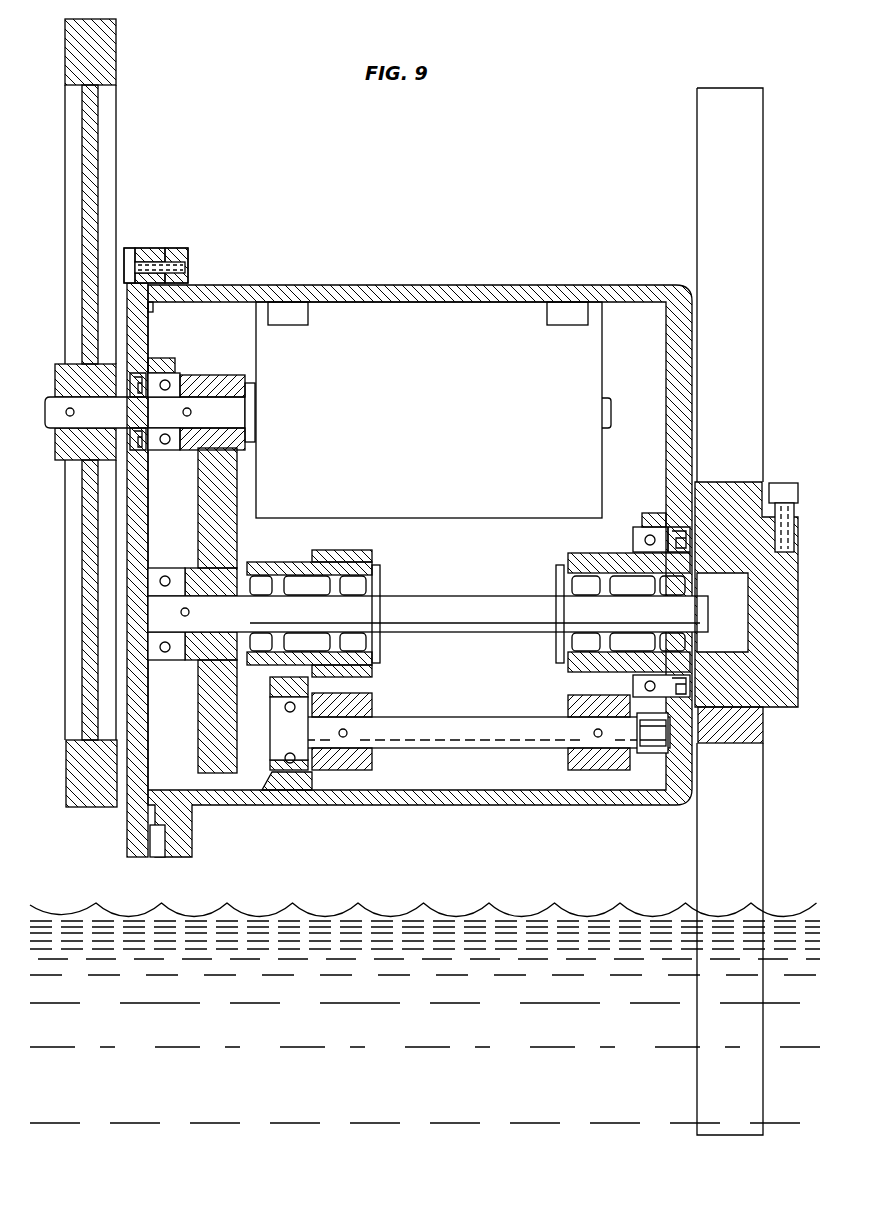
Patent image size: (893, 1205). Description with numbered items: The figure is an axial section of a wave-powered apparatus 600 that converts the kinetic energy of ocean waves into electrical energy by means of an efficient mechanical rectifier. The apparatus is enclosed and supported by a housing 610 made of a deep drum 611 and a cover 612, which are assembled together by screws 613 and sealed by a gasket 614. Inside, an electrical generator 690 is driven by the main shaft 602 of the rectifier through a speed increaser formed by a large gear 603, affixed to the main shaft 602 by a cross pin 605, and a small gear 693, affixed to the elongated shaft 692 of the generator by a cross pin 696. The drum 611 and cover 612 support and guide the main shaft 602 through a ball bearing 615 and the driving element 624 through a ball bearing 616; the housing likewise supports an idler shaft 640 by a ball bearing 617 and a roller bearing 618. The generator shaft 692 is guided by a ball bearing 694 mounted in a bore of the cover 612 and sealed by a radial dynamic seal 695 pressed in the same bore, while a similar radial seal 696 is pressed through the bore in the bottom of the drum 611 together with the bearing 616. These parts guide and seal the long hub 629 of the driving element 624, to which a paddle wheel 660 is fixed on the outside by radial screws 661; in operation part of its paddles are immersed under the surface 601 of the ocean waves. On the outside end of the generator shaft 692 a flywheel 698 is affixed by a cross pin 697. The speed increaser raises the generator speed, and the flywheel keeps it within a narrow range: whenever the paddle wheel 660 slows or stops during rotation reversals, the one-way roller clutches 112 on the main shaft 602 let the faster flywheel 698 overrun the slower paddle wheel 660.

The apparatus 600 is at (437, 120).
The flywheel 698 is at (116, 70).
The shaft of electrical generator 692 is at (57, 416).
The cross pin 697 is at (70, 406).
The cross pin / radial seal 696 is at (191, 412).
The cover 612 is at (128, 828).
The housing 610 is at (190, 241).
The screws 613 is at (186, 270).
The deep drum 611 is at (620, 290).
The gasket 614 is at (153, 306).
The electrical generator 690 is at (430, 318).
The radial dynamic seal 695 is at (176, 362).
The ball bearing 694 is at (172, 452).
The small gear 693 is at (238, 384).
The large gear 603 is at (208, 728).
The ball bearing 615 is at (165, 575).
The cross pin 605 is at (187, 618).
The main shaft 602 is at (435, 598).
The one-way roller clutches 112 is at (330, 640).
The driving element 624 is at (568, 560).
The ball bearing 616 is at (636, 525).
The long hub 629 is at (790, 640).
The paddle wheel 660 is at (758, 725).
The radial screws 661 is at (785, 488).
The idler shaft 640 is at (498, 725).
The ball bearing 617 is at (295, 772).
The roller bearing 618 is at (650, 748).
The surface of ocean waves 601 is at (790, 925).